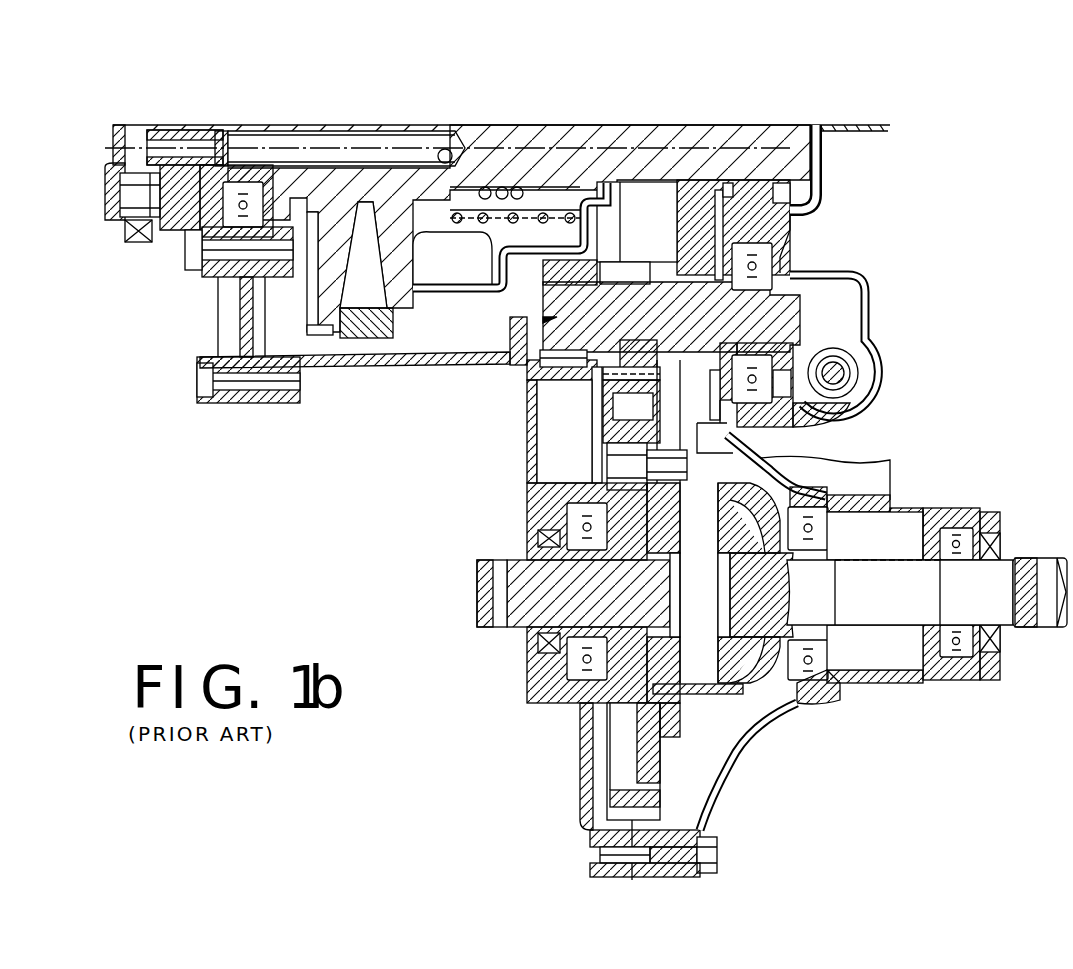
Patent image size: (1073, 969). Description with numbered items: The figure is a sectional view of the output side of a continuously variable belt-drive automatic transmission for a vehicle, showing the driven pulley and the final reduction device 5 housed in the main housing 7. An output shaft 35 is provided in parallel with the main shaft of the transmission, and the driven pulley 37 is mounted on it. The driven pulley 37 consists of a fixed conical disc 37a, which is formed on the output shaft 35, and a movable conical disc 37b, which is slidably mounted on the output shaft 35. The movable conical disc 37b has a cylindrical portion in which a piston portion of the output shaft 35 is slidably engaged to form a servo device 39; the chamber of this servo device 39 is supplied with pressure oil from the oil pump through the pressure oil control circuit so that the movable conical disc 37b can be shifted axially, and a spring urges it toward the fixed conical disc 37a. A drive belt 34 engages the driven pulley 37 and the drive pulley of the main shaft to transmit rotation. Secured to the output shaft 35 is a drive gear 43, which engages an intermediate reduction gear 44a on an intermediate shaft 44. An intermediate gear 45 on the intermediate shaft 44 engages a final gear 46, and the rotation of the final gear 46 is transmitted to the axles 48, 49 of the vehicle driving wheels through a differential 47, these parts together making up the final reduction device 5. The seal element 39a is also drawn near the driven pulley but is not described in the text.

The final reduction device 5 is at (713, 724).
The main housing 7 is at (443, 365).
The drive belt 34 is at (377, 343).
The output shaft 35 is at (803, 173).
The driven pulley 37 is at (321, 337).
The fixed conical disc 37a is at (323, 275).
The movable conical disc 37b is at (402, 308).
The servo device 39 is at (500, 270).
The oil seal 39a is at (452, 258).
The drive gear 43 is at (685, 205).
The intermediate shaft 44 is at (846, 313).
The intermediate reduction gear 44a is at (744, 428).
The intermediate gear 45 is at (637, 272).
The final gear 46 is at (617, 767).
The differential 47 is at (770, 695).
The axle 48 is at (487, 620).
The axle 49 is at (1030, 567).